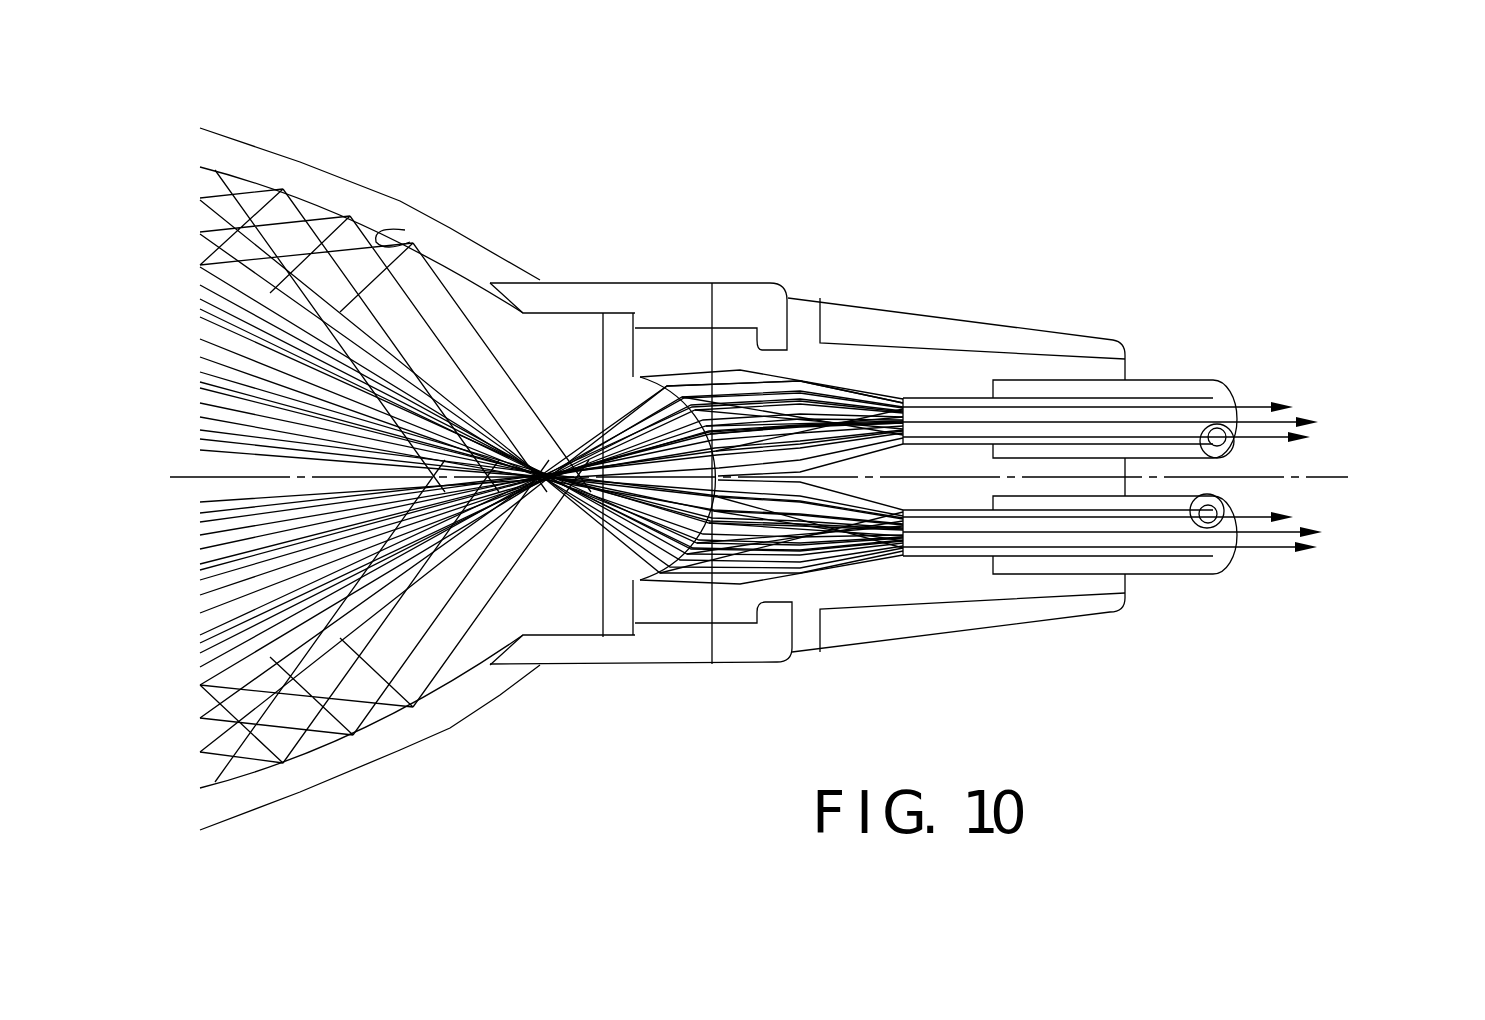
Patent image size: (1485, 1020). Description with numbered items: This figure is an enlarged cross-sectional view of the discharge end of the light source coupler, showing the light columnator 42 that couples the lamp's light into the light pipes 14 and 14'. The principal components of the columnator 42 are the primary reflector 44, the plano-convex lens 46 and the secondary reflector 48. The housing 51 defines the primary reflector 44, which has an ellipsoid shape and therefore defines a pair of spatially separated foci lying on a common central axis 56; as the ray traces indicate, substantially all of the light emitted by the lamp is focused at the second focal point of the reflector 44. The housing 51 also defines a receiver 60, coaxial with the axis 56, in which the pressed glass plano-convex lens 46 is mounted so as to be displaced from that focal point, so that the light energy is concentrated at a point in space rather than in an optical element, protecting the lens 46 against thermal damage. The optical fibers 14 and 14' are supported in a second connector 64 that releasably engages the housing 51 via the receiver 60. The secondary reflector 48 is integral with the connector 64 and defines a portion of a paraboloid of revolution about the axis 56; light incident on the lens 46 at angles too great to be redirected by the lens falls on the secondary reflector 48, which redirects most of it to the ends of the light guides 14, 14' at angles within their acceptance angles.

The housing 51 is at (217, 150).
The light columnator 42 is at (345, 160).
The primary reflector 44 is at (410, 242).
The plano-convex lens 46 is at (598, 377).
The secondary reflector 48 is at (840, 382).
The receiver 60 is at (673, 665).
The second connector 64 is at (1007, 628).
The optical fiber 14' is at (1125, 379).
The optical fiber 14 is at (1112, 582).
The central axis 56 is at (1335, 477).